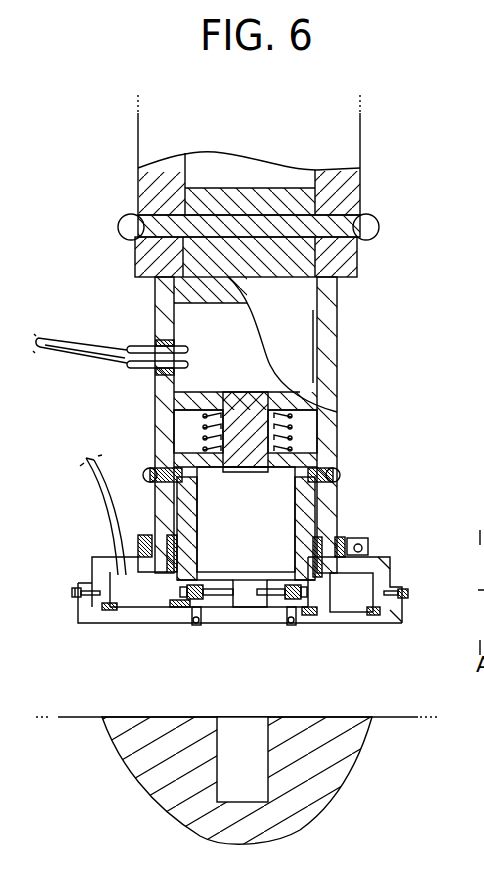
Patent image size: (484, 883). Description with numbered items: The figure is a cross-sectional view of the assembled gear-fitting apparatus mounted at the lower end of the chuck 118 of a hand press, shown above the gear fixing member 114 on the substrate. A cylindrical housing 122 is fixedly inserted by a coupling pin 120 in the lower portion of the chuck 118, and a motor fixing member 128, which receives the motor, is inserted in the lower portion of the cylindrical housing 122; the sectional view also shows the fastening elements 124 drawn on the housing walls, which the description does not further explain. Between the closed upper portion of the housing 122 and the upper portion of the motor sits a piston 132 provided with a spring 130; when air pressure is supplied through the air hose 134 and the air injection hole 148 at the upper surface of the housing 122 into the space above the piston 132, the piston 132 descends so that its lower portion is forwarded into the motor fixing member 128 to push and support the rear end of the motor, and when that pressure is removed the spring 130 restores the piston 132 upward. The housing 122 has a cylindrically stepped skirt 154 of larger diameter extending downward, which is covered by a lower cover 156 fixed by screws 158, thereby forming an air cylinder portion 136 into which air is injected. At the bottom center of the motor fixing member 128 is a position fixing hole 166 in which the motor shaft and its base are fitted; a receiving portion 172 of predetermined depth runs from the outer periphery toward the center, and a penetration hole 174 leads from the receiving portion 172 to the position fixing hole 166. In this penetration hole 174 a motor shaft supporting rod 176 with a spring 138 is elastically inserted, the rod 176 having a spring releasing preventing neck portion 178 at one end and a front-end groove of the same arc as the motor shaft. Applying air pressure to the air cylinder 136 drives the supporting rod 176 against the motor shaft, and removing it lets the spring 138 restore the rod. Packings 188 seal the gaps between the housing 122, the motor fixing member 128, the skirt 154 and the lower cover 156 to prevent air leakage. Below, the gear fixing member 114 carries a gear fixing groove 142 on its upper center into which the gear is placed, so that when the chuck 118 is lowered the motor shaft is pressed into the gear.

The chuck 118 is at (360, 153).
The coupling pin 120 is at (374, 232).
The cylindrical housing 122 is at (325, 353).
The lock nuts 124 is at (346, 478).
The motor fixing member 128 is at (311, 523).
The spring 130 is at (270, 436).
The piston 132 is at (180, 395).
The air hose 134 is at (146, 344).
The air cylinder portion 136 is at (347, 608).
The spring 138 is at (185, 620).
The gear fixing groove 142 is at (268, 737).
The air injection hole 148 is at (118, 548).
The cylindrically stepped skirt 154 is at (100, 562).
The lower cover 156 is at (137, 609).
The screws 158 is at (403, 598).
The position fixing hole 166 is at (242, 607).
The receiving portion 172 is at (308, 593).
The penetration hole 174 is at (214, 625).
The motor shaft supporting rod 176 is at (214, 575).
The spring releasing preventing neck portion 178 is at (163, 620).
The packings 188 is at (110, 607).
The gear fixing member 114 is at (84, 732).